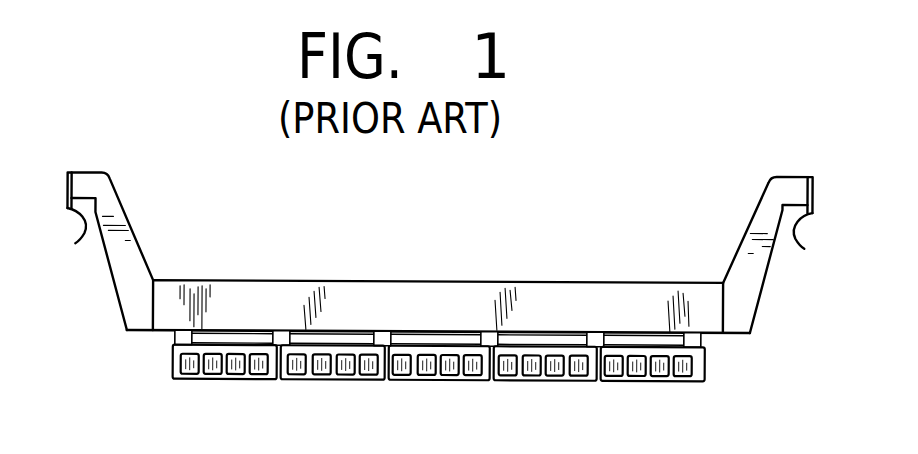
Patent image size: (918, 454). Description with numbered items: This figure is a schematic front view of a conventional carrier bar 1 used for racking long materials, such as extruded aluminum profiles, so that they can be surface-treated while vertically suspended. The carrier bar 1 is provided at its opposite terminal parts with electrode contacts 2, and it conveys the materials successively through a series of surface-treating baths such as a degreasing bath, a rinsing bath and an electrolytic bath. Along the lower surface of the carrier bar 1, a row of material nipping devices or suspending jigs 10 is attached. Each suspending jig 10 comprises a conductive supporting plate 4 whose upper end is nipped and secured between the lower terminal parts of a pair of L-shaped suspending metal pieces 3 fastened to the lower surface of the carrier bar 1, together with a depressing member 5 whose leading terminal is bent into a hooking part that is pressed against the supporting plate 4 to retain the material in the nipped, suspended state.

The carrier bar 1 is at (418, 297).
The electrode contacts 2 is at (438, 252).
The L-shaped suspending metal pieces 3 is at (608, 338).
The supporting plate 4 is at (182, 368).
The depressing member 5 is at (191, 375).
The material nipping device (suspending jig) 10 is at (473, 393).